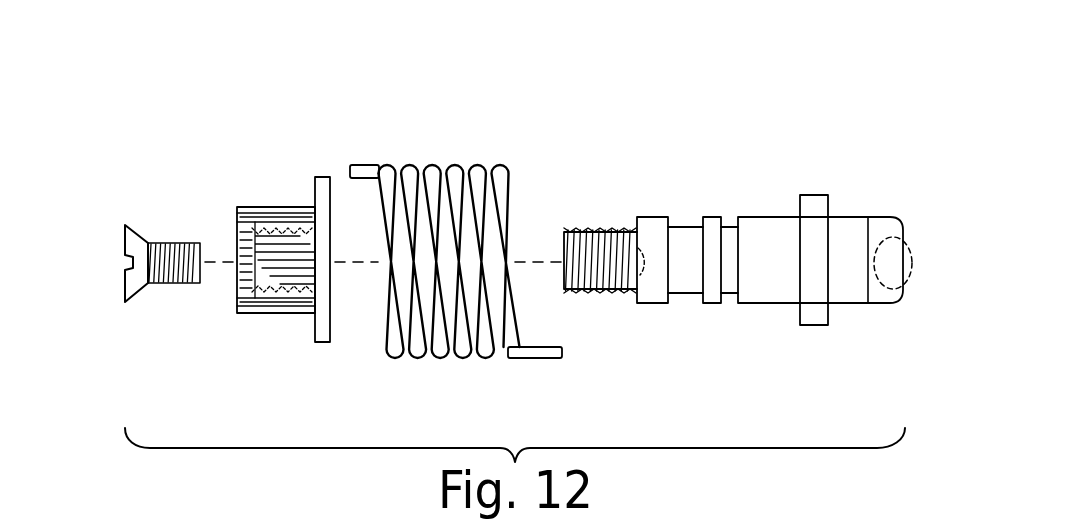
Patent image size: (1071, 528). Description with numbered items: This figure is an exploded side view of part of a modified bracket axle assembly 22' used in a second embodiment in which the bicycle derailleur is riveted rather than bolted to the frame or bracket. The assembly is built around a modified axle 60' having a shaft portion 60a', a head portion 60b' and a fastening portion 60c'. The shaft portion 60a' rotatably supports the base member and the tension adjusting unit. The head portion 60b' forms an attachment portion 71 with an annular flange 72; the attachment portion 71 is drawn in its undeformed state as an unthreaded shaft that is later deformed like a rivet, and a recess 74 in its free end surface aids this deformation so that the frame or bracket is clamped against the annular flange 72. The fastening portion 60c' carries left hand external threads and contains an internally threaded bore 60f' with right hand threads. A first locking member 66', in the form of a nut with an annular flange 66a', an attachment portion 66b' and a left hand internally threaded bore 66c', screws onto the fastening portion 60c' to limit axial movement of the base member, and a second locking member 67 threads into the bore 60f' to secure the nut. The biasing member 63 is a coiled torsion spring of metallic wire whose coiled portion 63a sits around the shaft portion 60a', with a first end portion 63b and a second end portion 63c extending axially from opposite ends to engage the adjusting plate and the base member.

The bracket axle assembly 22' is at (738, 238).
The axle 60' is at (738, 268).
The shaft portion 60a' is at (717, 301).
The head portion 60b' is at (820, 223).
The fastening portion 60c' is at (600, 226).
The internally threaded bore 60f' is at (626, 311).
The biasing member 63 is at (458, 247).
The coiled portion 63a is at (447, 358).
The first end portion 63b is at (540, 360).
The second end portion 63c is at (364, 166).
The first locking member 66' is at (240, 255).
The annular flange 66a' is at (308, 297).
The attachment portion 66b' is at (250, 302).
The internally threaded bore 66c' is at (231, 287).
The second locking member 67 is at (132, 216).
The attachment portion 71 is at (855, 290).
The annular flange 72 is at (820, 326).
The recess 74 is at (908, 278).